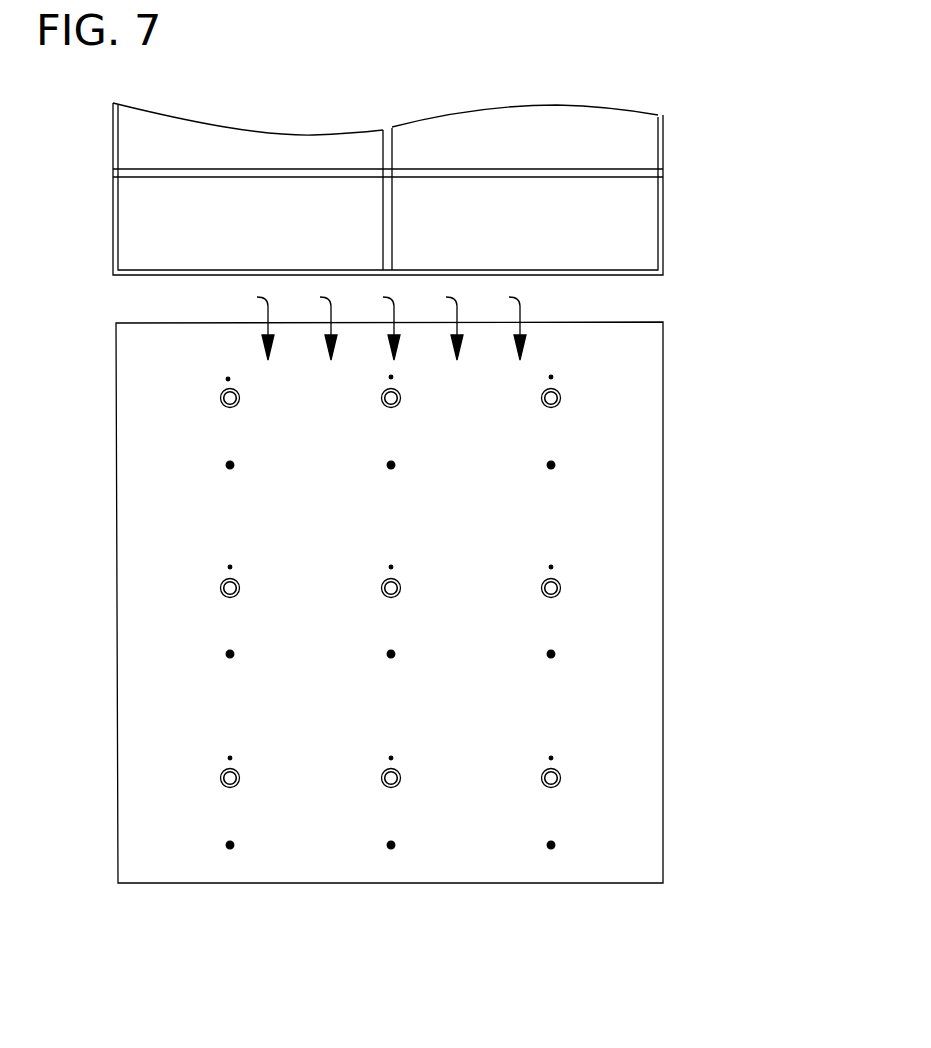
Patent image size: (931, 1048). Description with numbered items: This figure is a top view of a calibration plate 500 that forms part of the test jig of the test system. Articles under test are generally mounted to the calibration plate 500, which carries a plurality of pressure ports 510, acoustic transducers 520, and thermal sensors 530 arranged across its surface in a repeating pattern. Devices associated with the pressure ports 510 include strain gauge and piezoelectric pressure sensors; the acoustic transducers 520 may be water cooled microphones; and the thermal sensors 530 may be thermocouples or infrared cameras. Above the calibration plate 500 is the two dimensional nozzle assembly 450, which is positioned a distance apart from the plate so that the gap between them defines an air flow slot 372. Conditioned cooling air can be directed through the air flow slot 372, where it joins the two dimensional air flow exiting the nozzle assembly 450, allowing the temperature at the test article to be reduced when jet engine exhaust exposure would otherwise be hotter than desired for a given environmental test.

The two dimensional nozzle assembly 450 is at (663, 216).
The air flow slot 372 is at (606, 305).
The calibration plate 500 is at (618, 425).
The pressure ports 510 is at (228, 379).
The acoustic transducers 520 is at (221, 405).
The thermal sensors 530 is at (228, 466).